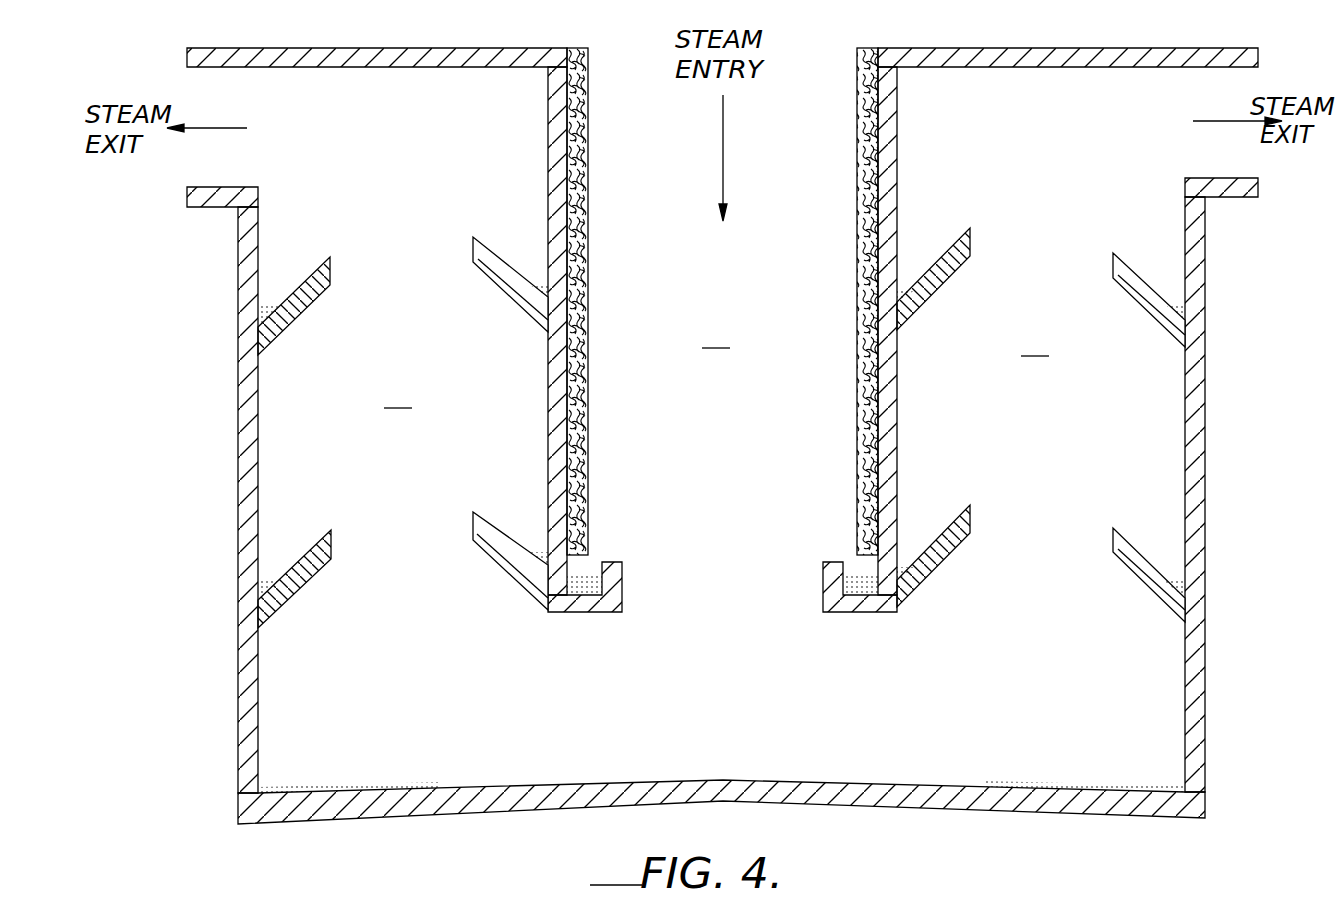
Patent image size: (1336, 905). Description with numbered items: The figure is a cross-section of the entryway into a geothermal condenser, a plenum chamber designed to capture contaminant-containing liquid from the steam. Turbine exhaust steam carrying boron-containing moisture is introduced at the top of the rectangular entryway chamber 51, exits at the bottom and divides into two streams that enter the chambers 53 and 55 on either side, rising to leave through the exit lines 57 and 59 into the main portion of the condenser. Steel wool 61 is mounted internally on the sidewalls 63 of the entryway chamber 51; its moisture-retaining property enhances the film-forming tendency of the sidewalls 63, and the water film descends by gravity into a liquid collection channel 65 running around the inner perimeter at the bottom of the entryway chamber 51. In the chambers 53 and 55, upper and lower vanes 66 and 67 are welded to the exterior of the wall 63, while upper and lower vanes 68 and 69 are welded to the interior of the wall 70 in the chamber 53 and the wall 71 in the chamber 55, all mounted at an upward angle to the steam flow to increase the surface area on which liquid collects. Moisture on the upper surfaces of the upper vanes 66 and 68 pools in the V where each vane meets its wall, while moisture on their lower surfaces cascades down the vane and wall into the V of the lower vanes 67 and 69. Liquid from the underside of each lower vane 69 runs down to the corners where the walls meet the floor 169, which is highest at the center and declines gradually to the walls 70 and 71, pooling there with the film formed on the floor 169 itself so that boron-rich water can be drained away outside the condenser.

The entryway chamber 51 is at (718, 334).
The chamber 53 is at (400, 394).
The chamber 55 is at (1037, 341).
The exit line 57 is at (207, 207).
The exit line 59 is at (1238, 197).
The steel wool 61 is at (588, 302).
The sidewall 63 is at (548, 428).
The liquid collection channel 65 is at (622, 582).
The upper vane 66 is at (510, 292).
The lower vane 67 is at (508, 568).
The upper vane 68 is at (300, 313).
The lower vane 69 is at (302, 597).
The wall 70 is at (258, 735).
The wall 71 is at (1205, 733).
The floor 169 is at (730, 781).